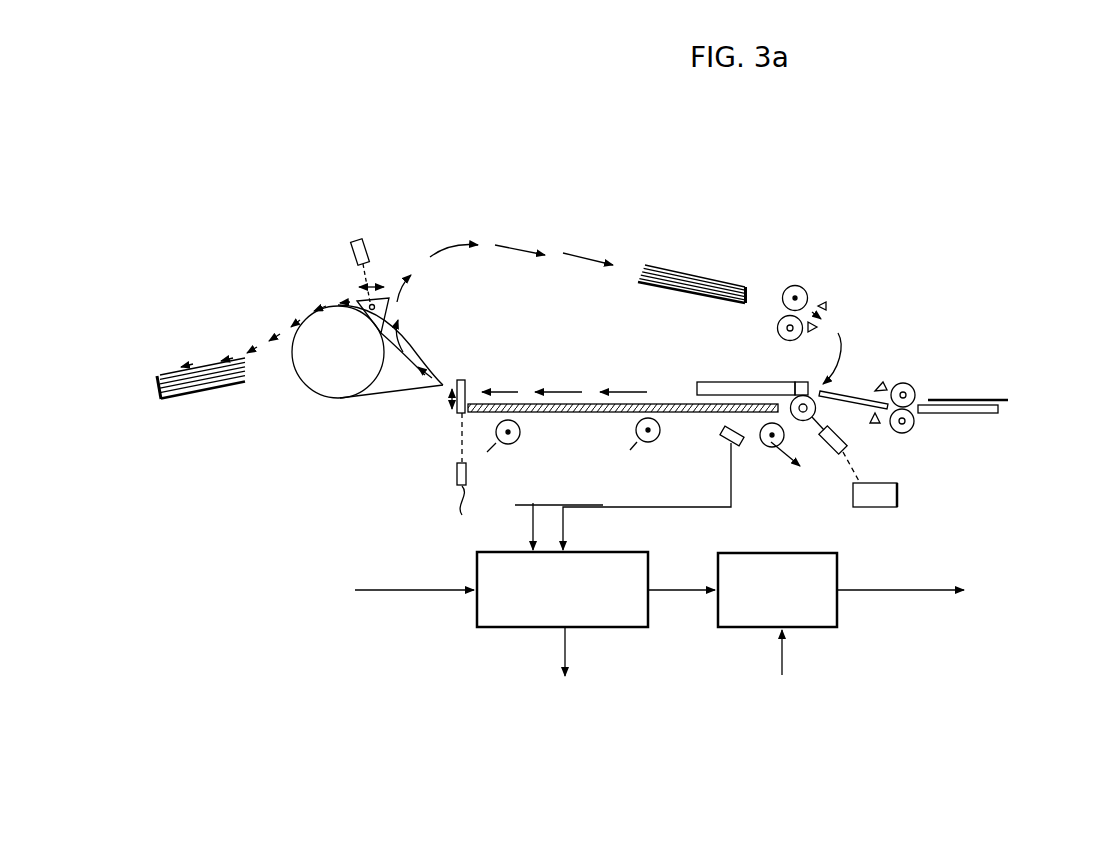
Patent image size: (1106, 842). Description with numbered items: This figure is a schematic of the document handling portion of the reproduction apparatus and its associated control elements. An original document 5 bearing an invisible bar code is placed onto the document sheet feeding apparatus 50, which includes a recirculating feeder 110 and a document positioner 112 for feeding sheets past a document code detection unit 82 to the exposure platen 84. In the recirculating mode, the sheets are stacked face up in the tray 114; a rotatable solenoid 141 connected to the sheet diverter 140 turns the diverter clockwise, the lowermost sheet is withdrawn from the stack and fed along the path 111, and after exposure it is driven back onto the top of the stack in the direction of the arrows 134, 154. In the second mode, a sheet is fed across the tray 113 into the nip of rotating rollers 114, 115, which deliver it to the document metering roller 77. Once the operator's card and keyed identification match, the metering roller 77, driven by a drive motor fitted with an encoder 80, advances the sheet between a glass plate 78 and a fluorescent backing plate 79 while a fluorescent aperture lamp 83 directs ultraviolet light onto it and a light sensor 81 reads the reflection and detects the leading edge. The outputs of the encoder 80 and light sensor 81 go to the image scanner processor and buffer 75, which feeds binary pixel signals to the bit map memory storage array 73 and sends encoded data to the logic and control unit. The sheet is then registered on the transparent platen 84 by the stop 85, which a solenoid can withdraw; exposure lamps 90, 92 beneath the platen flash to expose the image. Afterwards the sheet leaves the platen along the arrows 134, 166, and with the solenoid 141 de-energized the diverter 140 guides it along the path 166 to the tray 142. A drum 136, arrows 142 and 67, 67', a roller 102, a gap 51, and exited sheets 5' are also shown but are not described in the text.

The original document 5 is at (814, 318).
The scanned document sheets 5' is at (183, 369).
The document sheet feeding apparatus 50 is at (430, 241).
The document scanning station 51 is at (573, 330).
The drive motor 67 is at (839, 315).
The drive motor 67' is at (877, 371).
The bit map memory storage array 73 is at (810, 553).
The image scanner processor and buffer 75 is at (600, 553).
The document metering roller 77 is at (803, 421).
The glass plate 78 is at (710, 413).
The backing plate 79 is at (712, 381).
The encoder 80 is at (845, 447).
The light sensor 81 is at (718, 446).
The document code detection unit 82 is at (720, 467).
The fluorescent aperture lamp 83 is at (768, 448).
The exposure platen 84 is at (590, 421).
The stop 85 is at (466, 390).
The exposure lamp 90 is at (648, 443).
The exposure lamp 92 is at (513, 444).
The feed roller 102 is at (805, 292).
The recirculating feeder 110 is at (515, 213).
The path 111 is at (830, 349).
The document positioner 112 is at (1000, 397).
The tray 113 is at (985, 414).
The tray 114 is at (912, 431).
The rotating roller 115 is at (911, 387).
The arrow 134 is at (430, 383).
The drum 136 is at (346, 397).
The sheet diverter 140 is at (360, 302).
The rotatable solenoid 141 is at (352, 250).
The tray 142 is at (392, 310).
The arrow 154 is at (413, 283).
The path 166 is at (288, 332).